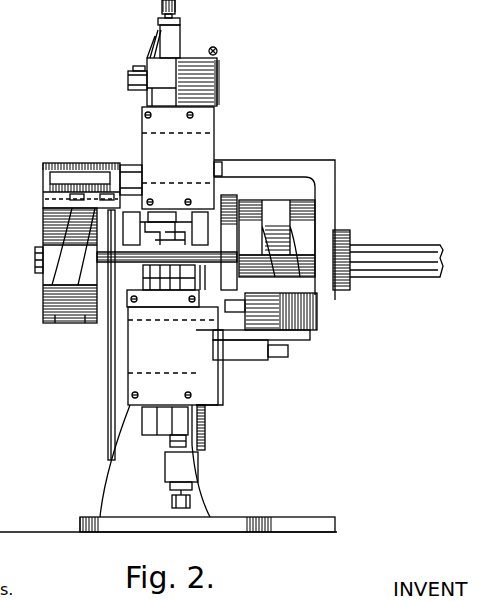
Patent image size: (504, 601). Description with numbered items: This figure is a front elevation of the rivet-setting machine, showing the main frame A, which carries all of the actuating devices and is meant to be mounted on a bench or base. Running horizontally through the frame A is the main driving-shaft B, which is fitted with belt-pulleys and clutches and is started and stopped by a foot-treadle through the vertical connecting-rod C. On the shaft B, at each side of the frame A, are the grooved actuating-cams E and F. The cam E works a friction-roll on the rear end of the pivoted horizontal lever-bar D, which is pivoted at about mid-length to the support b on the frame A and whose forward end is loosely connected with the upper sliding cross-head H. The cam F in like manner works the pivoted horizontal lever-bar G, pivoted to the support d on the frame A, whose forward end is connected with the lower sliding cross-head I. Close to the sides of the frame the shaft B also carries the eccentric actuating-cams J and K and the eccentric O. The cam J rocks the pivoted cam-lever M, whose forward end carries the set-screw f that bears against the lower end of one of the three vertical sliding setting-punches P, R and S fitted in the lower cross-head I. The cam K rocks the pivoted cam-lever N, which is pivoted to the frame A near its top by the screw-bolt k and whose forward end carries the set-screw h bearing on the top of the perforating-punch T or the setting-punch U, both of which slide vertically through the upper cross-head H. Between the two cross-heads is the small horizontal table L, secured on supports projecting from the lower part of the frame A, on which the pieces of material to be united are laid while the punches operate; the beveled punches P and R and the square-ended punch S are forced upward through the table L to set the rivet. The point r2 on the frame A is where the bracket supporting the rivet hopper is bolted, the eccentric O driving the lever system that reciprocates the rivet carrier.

The main frame A is at (168, 320).
The cam-lever N is at (163, 29).
The bolting point r2 is at (189, 58).
The perforating-punch T is at (183, 140).
The setting-punch U is at (156, 155).
The set-screw h is at (149, 68).
The screw-bolt k is at (132, 81).
The upper sliding cross-head H is at (121, 153).
The horizontal lever-bar D is at (81, 175).
The support b is at (111, 199).
The grooved actuating-cam E is at (70, 265).
The main horizontal driving-shaft B is at (230, 259).
The vertical connecting-rod C is at (108, 419).
The eccentric actuating-cam K is at (131, 228).
The eccentric actuating-cam J is at (200, 228).
The eccentric O is at (229, 242).
The grooved actuating-cam F is at (277, 238).
The table L is at (177, 277).
The setting-punch S is at (163, 362).
The setting-punch R is at (162, 364).
The setting-punch P is at (177, 364).
The lower sliding cross-head I is at (235, 374).
The support d is at (250, 310).
The horizontal lever-bar G is at (298, 338).
The cam-lever M is at (185, 456).
The set-screw f is at (170, 443).